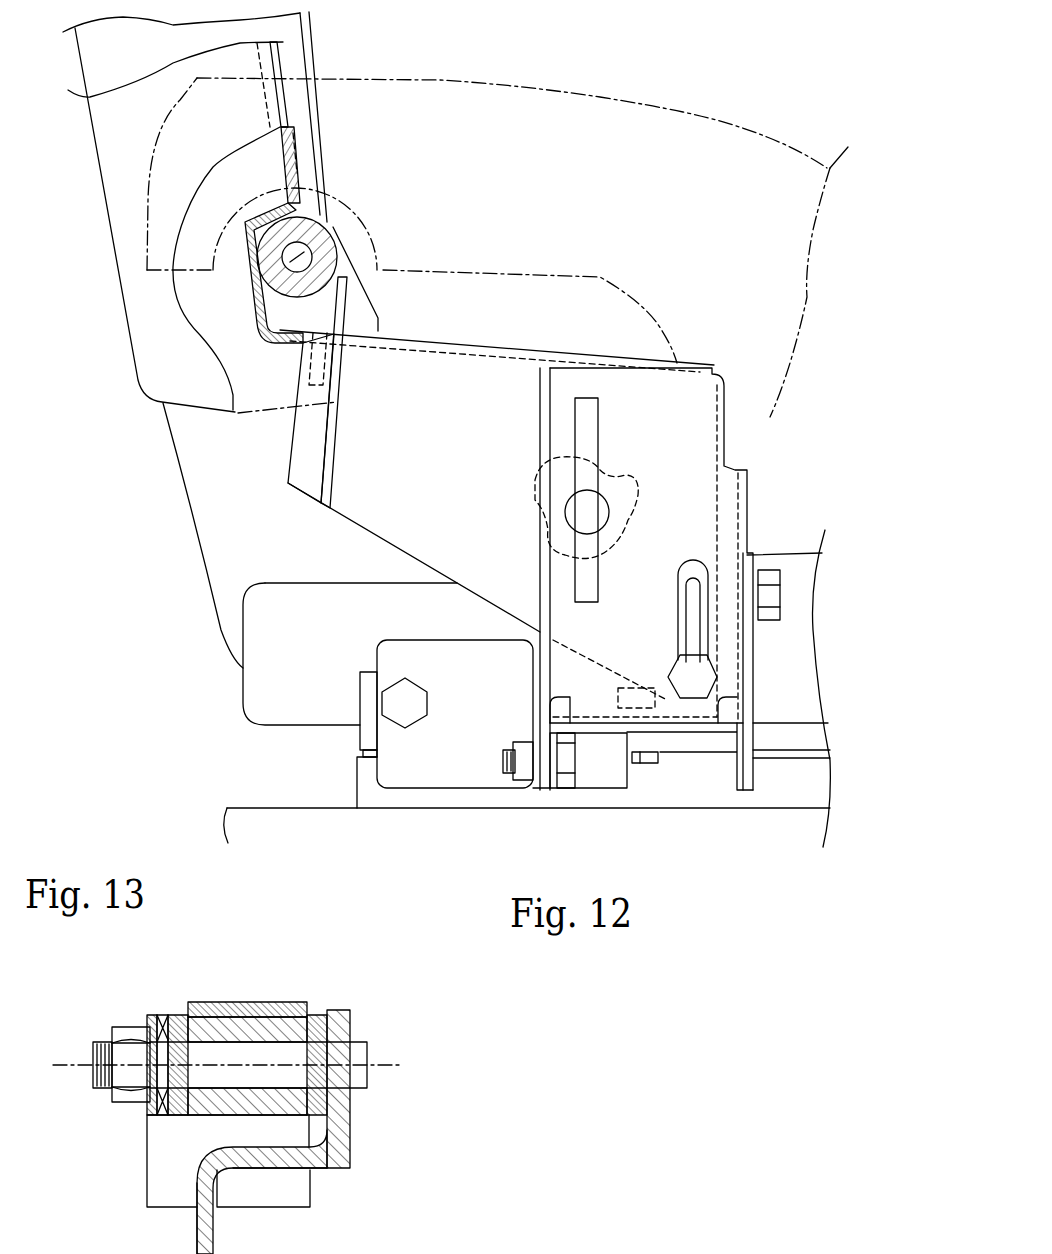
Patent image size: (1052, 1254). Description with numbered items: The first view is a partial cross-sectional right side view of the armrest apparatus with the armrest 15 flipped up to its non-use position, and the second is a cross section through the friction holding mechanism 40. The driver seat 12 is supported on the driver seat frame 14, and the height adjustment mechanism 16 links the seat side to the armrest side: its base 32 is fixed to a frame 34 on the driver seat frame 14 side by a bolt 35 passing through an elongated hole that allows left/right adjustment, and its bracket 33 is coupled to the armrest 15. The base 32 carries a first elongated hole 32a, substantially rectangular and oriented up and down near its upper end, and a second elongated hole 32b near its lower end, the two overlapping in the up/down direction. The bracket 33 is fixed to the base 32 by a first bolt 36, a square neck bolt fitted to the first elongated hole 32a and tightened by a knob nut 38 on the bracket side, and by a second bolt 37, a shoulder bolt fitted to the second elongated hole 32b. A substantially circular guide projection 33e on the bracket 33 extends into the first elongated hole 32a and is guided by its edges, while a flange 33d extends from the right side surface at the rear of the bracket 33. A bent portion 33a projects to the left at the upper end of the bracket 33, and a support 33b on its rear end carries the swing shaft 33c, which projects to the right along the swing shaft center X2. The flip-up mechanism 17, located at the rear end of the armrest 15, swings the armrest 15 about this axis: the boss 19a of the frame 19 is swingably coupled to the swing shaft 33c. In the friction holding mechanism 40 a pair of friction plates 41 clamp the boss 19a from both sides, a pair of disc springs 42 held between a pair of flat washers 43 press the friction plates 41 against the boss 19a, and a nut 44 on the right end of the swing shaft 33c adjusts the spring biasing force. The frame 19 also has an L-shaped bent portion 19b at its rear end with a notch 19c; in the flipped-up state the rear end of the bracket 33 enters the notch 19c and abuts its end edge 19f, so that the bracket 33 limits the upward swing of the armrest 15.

In FIG. 12, the driver seat 12 is at (307, 50).
In FIG. 12, the driver seat frame 14 is at (357, 792).
In FIG. 12, the armrest 15 is at (128, 113).
In FIG. 12, the height adjustment mechanism 16 is at (522, 504).
In FIG. 12, the flip-up mechanism 17 is at (207, 231).
In FIG. 12, the frame 19 is at (285, 160).
In FIG. 12, the boss 19a is at (306, 248).
In FIG. 13, the boss 19a is at (227, 1002).
In FIG. 12, the bent portion 19b is at (292, 358).
In FIG. 12, the notch 19c is at (345, 363).
In FIG. 13, the notch 19c is at (197, 1212).
In FIG. 12, the end edge 19f is at (254, 273).
In FIG. 13, the end edge 19f is at (228, 1161).
In FIG. 12, the base 32 is at (748, 513).
In FIG. 12, the first elongated hole 32a is at (583, 440).
In FIG. 12, the second elongated hole 32b is at (692, 580).
In FIG. 12, the bracket 33 is at (376, 537).
In FIG. 13, the bracket 33 is at (214, 1243).
In FIG. 12, the bent portion 33a is at (478, 372).
In FIG. 13, the bent portion 33a is at (288, 1172).
In FIG. 12, the support 33b is at (363, 316).
In FIG. 13, the support 33b is at (325, 1128).
In FIG. 12, the swing shaft 33c is at (268, 277).
In FIG. 13, the swing shaft 33c is at (280, 1002).
In FIG. 12, the flange 33d is at (342, 422).
In FIG. 12, the guide projection 33e is at (590, 577).
In FIG. 12, the frame 34 is at (700, 733).
In FIG. 12, the bolt 35 is at (770, 593).
In FIG. 12, the first bolt 36 is at (585, 513).
In FIG. 12, the second bolt 37 is at (697, 678).
In FIG. 12, the knob nut 38 is at (617, 476).
In FIG. 13, the friction holding mechanism 40 is at (332, 1006).
In FIG. 13, the friction plates 41 is at (180, 1015).
In FIG. 13, the disc springs 42 is at (165, 1015).
In FIG. 13, the flat washers 43 is at (158, 1117).
In FIG. 13, the nut 44 is at (122, 1030).
In FIG. 12, the swing shaft center X2 is at (220, 297).
In FIG. 13, the swing shaft center X2 is at (246, 1065).